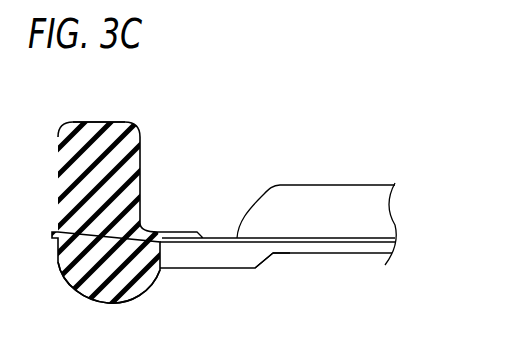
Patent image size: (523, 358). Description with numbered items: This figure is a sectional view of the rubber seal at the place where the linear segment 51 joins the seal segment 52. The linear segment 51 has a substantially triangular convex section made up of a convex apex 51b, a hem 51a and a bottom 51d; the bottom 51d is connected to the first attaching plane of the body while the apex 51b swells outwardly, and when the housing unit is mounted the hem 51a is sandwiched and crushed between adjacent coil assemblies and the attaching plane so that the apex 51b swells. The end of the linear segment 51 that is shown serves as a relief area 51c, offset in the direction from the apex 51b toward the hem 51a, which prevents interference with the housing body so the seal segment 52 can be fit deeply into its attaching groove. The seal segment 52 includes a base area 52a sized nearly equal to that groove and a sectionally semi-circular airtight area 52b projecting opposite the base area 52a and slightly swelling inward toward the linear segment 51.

The linear segment 51 is at (280, 178).
The hem 51a is at (338, 254).
The convex apex 51b is at (341, 185).
The relief area 51c is at (217, 269).
The bottom 51d is at (281, 254).
The seal segment 52 is at (150, 132).
The base area 52a is at (105, 138).
The airtight area 52b is at (133, 296).